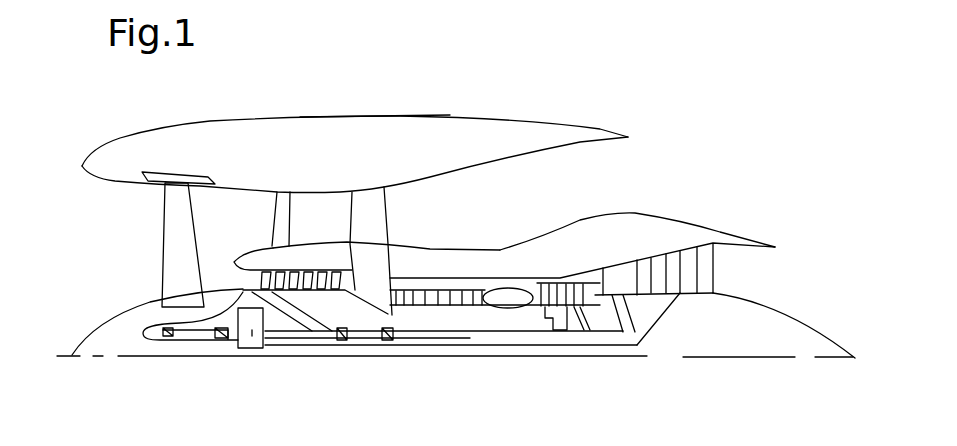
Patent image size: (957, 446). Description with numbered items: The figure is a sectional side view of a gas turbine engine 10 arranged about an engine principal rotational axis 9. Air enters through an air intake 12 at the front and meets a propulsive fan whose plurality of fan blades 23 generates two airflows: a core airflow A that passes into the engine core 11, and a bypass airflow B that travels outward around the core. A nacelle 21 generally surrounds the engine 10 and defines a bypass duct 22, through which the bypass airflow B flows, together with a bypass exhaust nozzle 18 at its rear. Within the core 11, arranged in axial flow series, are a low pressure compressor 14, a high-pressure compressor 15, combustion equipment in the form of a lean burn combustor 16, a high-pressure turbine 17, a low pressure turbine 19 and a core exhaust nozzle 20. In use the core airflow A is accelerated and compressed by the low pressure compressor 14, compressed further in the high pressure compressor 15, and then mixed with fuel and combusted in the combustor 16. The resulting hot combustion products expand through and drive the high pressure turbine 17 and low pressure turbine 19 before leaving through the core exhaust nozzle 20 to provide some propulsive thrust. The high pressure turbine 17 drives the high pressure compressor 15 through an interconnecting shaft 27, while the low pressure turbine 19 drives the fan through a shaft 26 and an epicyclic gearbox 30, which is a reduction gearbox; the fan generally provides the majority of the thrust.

The engine principal rotational axis 9 is at (683, 358).
The gas turbine engine 10 is at (147, 133).
The core 11 is at (497, 268).
The air intake 12 is at (86, 215).
The low pressure compressor 14 is at (316, 270).
The high-pressure compressor 15 is at (443, 290).
The lean burn combustor 16 is at (517, 300).
The high-pressure turbine 17 is at (568, 287).
The bypass exhaust nozzle 18 is at (690, 179).
The low pressure turbine 19 is at (690, 260).
The core exhaust nozzle 20 is at (752, 277).
The nacelle 21 is at (377, 133).
The bypass duct 22 is at (604, 187).
The fan blades 23 is at (163, 248).
The shaft 26 is at (440, 347).
The interconnecting shaft 27 is at (477, 333).
The epicyclic gearbox 30 is at (250, 348).
The core airflow A is at (226, 284).
The bypass airflow B is at (232, 224).